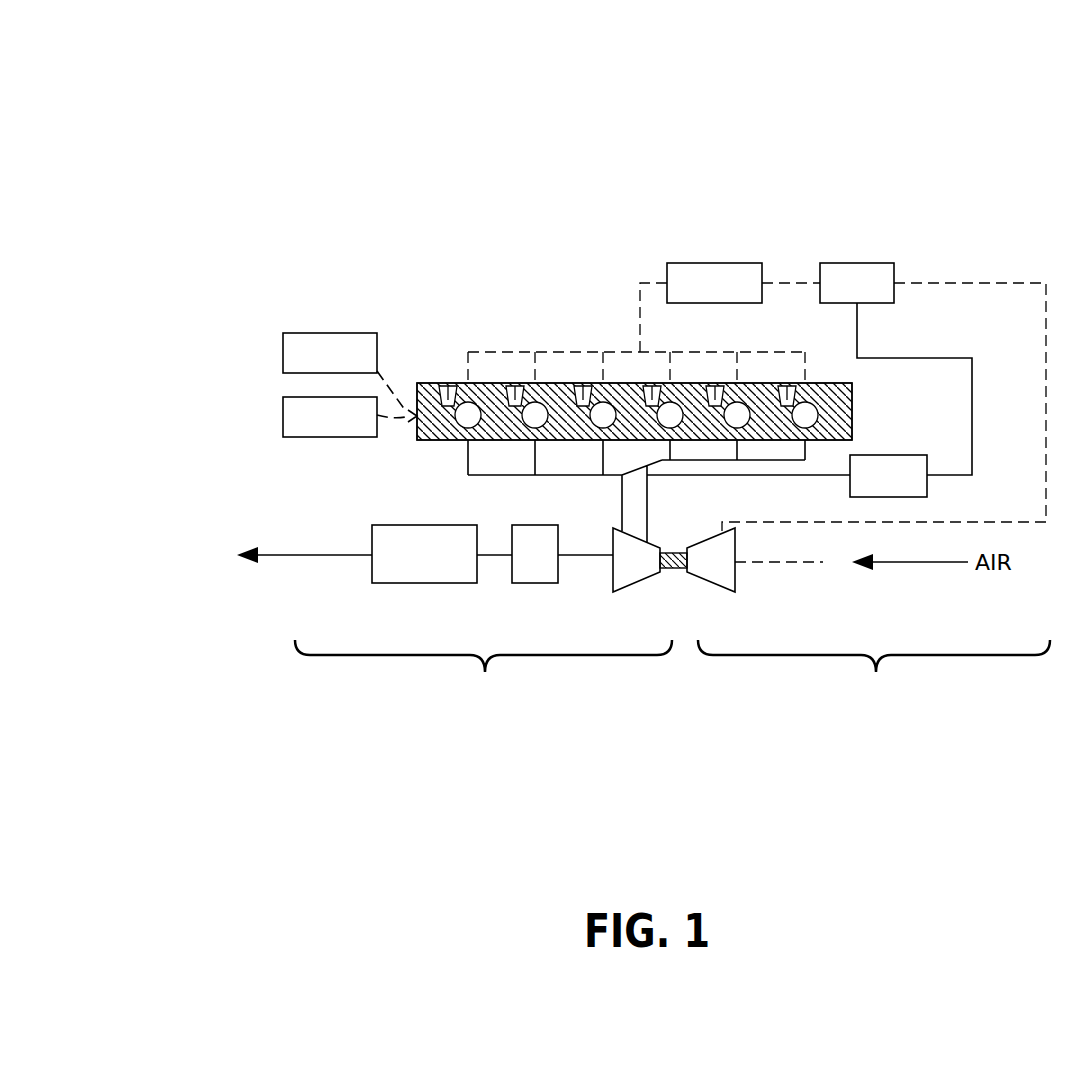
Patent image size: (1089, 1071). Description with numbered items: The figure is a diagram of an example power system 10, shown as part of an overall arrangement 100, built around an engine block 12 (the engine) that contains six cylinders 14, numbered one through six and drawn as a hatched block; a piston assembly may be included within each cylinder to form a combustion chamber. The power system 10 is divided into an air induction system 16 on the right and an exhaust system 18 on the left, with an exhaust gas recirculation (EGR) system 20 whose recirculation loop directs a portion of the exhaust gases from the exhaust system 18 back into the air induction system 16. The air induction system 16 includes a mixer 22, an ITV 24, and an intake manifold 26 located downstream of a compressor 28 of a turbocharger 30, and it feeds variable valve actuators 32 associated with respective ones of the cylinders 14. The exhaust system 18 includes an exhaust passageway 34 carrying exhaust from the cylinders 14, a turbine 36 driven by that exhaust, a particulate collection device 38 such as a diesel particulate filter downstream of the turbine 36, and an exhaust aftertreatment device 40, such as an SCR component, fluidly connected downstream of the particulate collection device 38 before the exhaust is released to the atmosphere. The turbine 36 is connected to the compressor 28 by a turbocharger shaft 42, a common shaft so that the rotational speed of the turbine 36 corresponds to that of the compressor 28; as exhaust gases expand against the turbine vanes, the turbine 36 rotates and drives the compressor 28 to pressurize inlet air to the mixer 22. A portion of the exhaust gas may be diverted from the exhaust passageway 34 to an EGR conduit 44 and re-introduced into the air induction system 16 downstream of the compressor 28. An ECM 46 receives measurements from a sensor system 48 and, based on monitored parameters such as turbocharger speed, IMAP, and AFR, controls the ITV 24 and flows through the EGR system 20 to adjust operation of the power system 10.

The system 100 is at (132, 51).
The power system 10 is at (415, 255).
The engine block 12 is at (423, 385).
The cylinders 14 is at (560, 383).
The variable valve actuators 32 is at (700, 383).
The intake manifold 26 is at (640, 290).
The ITV 24 is at (728, 295).
The mixer 22 is at (871, 295).
The exhaust gas recirculation (EGR) system 20 is at (902, 488).
The sensor system 48 is at (344, 365).
The ECM 46 is at (344, 429).
The exhaust passageway 34 is at (620, 505).
The EGR conduit 44 is at (822, 478).
The turbine 36 is at (613, 578).
The turbocharger shaft 42 is at (680, 553).
The compressor 28 is at (735, 578).
The turbocharger 30 is at (684, 598).
The particulate collection device 38 is at (549, 566).
The exhaust aftertreatment device 40 is at (438, 566).
The exhaust system 18 is at (483, 674).
The air induction system 16 is at (874, 674).